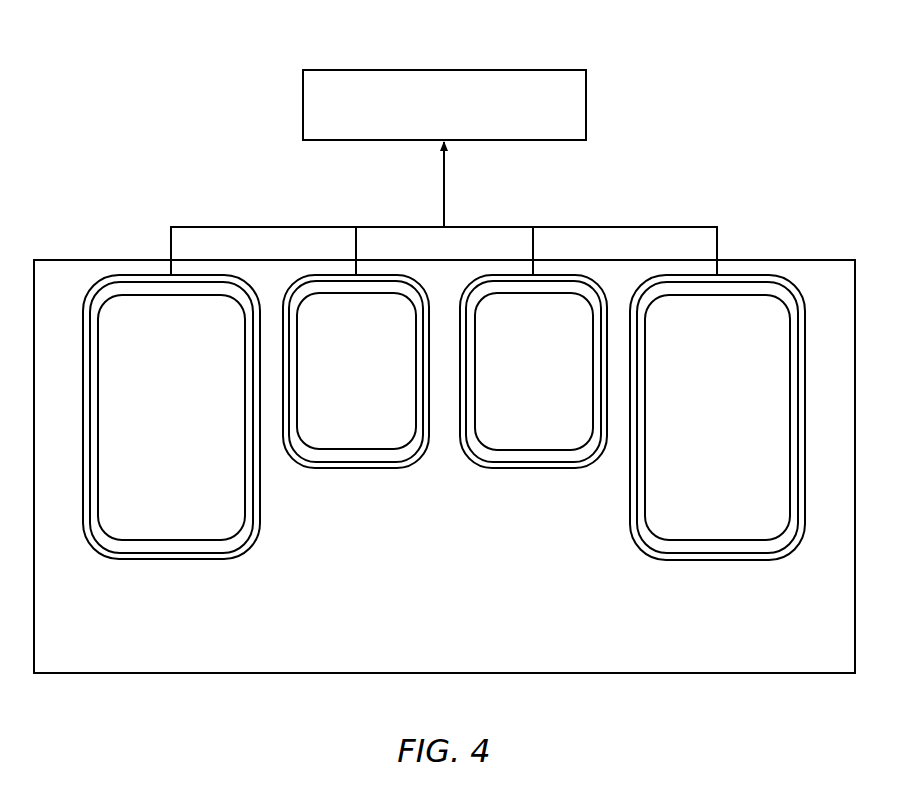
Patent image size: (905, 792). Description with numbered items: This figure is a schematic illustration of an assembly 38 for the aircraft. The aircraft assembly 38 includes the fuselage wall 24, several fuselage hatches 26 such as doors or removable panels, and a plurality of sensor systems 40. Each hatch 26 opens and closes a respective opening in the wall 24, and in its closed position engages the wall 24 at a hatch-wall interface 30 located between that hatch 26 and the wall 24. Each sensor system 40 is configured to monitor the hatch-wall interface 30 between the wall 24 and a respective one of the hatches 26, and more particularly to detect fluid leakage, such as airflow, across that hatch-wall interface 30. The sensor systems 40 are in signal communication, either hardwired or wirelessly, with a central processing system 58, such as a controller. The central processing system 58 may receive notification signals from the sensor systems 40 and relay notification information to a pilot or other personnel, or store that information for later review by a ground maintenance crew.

The fuselage wall 24 is at (836, 260).
The fuselage hatch 26 is at (143, 540).
The hatch-wall interface 30 is at (193, 560).
The aircraft assembly 38 is at (748, 88).
The sensor system 40 is at (137, 266).
The central processing system 58 is at (586, 100).